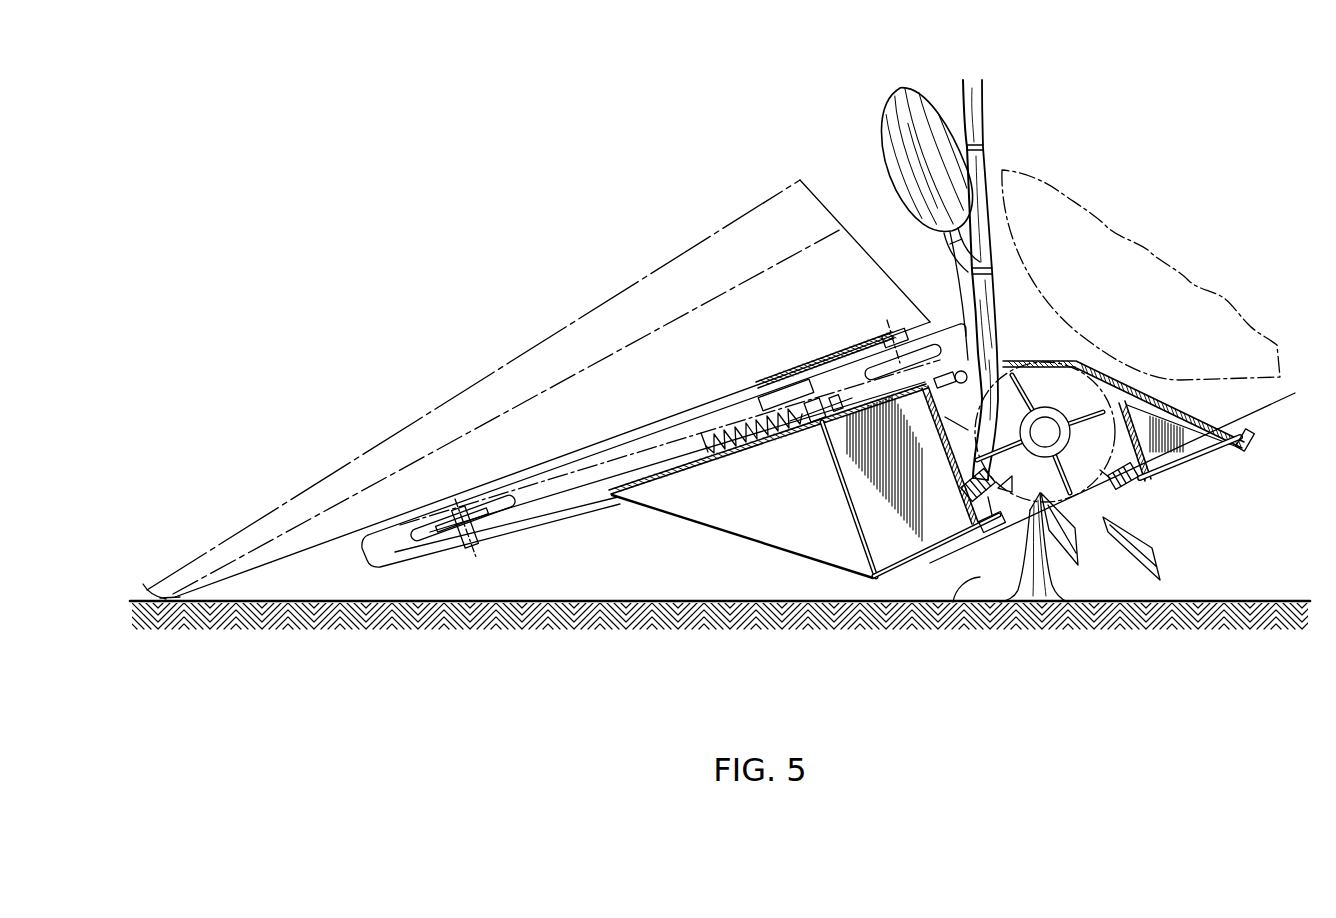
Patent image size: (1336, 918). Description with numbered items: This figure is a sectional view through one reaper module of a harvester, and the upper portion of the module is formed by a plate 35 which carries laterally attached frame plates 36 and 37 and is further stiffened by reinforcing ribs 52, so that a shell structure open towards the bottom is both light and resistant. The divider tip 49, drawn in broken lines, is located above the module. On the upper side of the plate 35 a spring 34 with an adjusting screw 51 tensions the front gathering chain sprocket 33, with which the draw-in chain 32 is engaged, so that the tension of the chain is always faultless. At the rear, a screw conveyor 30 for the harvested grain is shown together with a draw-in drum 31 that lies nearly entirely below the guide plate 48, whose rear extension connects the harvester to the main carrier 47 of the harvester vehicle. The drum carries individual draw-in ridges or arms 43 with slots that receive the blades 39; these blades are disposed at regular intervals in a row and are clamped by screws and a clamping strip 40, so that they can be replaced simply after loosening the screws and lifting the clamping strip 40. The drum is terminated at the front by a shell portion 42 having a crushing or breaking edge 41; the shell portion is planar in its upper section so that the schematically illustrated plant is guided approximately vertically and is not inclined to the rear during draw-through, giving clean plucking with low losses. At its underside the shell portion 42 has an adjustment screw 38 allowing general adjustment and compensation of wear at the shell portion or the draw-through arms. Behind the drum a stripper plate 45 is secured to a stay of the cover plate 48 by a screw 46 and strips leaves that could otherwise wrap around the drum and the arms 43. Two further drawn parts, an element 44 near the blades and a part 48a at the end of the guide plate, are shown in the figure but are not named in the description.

The screw conveyor 30 is at (1082, 291).
The draw-in drum 31 is at (1047, 418).
The draw-in chain 32 is at (550, 488).
The front gathering chain sprocket 33 is at (482, 516).
The spring 34 is at (706, 452).
The plate 35 is at (766, 450).
The frame plate 36 is at (808, 545).
The frame plate 37 is at (877, 536).
The adjustment screw 38 is at (913, 553).
The blades 39 is at (1020, 530).
The clamping strip 40 is at (963, 477).
The crushing or breaking edge 41 is at (960, 340).
The shell portion 42 is at (968, 430).
The draw-in ridges or arms 43 is at (1101, 478).
The blades 44 is at (1053, 505).
The stripper plate 45 is at (1107, 460).
The screw 46 is at (1162, 468).
The main carrier 47 is at (1180, 460).
The guide plate 48 is at (1023, 368).
The bracket 48a is at (1223, 455).
The divider tip 49 is at (595, 333).
The adjusting screw 51 is at (797, 392).
The reinforcing ribs 52 is at (943, 418).